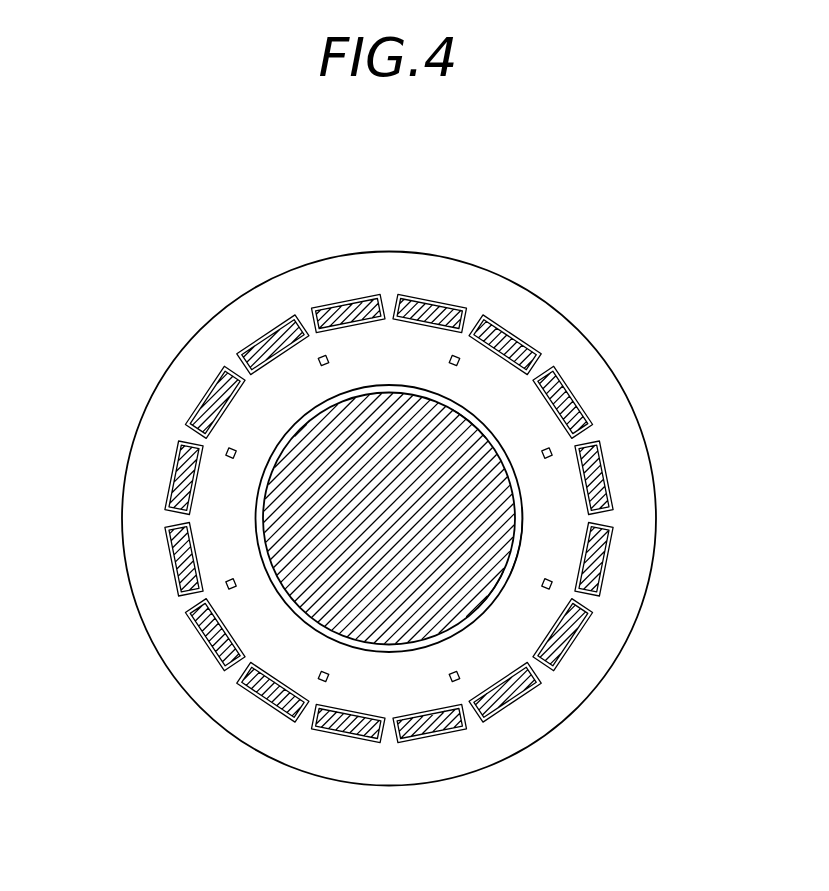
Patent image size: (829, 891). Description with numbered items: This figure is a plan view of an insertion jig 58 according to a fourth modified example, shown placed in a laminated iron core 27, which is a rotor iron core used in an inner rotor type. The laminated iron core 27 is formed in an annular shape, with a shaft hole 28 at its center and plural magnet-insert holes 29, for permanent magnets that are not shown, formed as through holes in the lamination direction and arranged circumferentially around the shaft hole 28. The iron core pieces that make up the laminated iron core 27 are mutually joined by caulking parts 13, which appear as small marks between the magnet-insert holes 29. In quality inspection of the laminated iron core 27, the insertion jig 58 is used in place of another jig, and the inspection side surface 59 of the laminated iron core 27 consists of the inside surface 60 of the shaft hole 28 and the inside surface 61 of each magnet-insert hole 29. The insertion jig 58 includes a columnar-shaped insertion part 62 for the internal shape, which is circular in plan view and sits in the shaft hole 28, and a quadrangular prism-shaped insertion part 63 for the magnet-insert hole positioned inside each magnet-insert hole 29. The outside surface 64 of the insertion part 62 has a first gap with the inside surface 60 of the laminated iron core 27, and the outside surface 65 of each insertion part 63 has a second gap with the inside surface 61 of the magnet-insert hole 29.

The caulking part 13 is at (320, 357).
The laminated iron core 27 is at (586, 313).
The shaft hole 28 is at (386, 369).
The magnet-insert hole 29 is at (392, 503).
The insertion jig 58 is at (536, 561).
The inspection side surface 59 is at (611, 420).
The inside surface 60 is at (482, 414).
The inside surface 61 is at (570, 408).
The insertion part for internal shape 62 is at (510, 518).
The insertion part for magnet-insert hole 63 is at (611, 478).
The outside surface 64 is at (504, 601).
The outside surface 65 is at (525, 703).